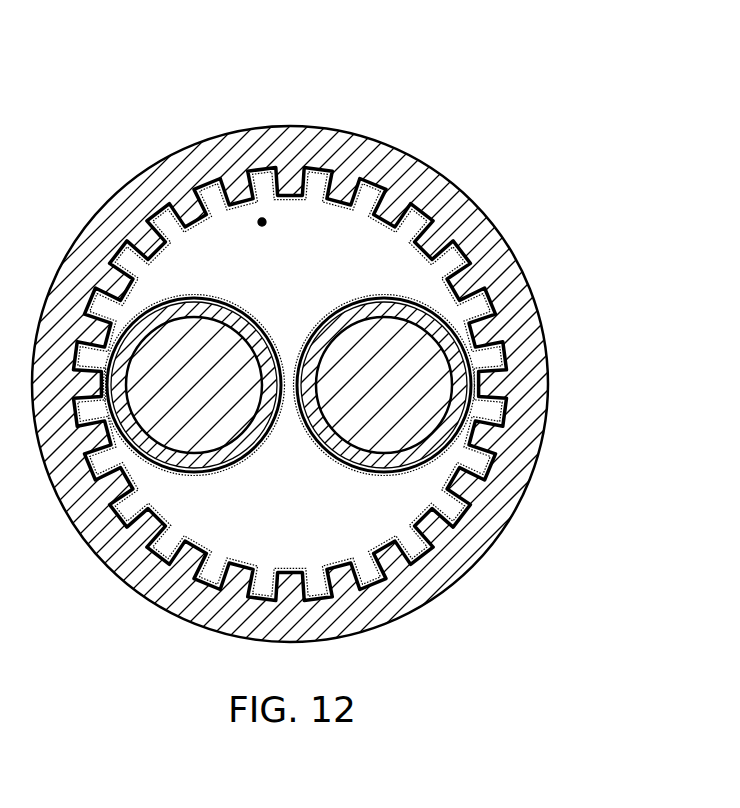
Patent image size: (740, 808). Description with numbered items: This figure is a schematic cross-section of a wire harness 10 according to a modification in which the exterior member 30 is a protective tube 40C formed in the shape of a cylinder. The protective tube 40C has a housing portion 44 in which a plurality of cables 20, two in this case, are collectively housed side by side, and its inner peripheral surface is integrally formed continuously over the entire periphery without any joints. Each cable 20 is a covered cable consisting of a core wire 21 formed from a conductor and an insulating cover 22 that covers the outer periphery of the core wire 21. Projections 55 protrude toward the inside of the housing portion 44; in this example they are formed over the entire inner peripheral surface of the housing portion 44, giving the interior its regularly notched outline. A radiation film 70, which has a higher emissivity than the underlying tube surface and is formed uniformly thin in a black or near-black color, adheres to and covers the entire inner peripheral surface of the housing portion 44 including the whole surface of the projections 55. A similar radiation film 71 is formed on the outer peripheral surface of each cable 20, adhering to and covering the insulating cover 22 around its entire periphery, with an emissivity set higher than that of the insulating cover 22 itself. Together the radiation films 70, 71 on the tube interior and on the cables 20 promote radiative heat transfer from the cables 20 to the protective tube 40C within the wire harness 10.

The wire harness 10 is at (533, 108).
The cable 20 is at (300, 421).
The core wire 21 is at (233, 424).
The insulating cover 22 is at (215, 458).
The exterior member 30 is at (370, 404).
The protective tube 40C is at (507, 229).
The housing portion 44 is at (262, 220).
The projection 55 is at (384, 216).
The radiation film 70 is at (283, 200).
The radiation film 71 is at (316, 326).